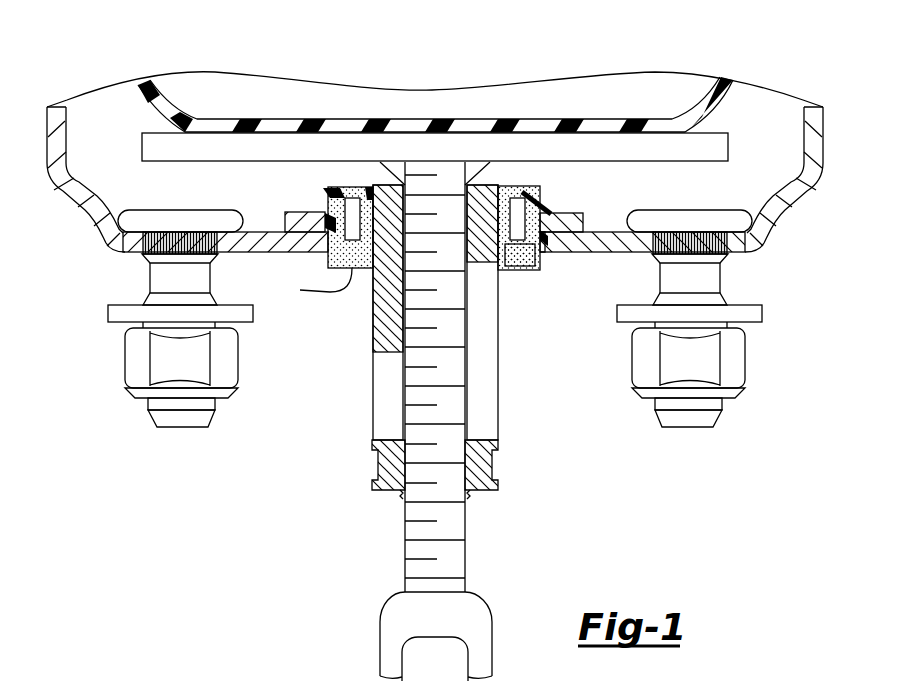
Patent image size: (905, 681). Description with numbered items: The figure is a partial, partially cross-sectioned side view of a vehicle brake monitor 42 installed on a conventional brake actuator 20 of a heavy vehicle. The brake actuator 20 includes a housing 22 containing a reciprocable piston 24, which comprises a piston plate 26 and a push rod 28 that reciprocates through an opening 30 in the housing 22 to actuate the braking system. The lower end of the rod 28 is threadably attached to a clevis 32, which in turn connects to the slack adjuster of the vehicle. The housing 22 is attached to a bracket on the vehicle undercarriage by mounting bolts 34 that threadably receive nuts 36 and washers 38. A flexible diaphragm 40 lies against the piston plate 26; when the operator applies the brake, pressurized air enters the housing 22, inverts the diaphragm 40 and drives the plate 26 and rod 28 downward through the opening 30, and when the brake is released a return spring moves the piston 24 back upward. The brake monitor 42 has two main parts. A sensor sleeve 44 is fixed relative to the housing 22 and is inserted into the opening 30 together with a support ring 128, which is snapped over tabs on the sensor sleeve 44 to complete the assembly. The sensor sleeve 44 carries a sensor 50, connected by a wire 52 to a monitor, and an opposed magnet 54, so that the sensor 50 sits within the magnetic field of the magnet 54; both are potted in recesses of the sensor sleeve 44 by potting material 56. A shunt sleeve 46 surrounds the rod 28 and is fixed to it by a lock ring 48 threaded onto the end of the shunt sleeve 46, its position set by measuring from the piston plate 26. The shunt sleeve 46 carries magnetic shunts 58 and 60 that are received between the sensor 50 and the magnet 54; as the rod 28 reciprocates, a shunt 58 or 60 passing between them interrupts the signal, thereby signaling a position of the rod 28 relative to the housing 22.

The brake actuator 20 is at (781, 83).
The housing 22 is at (821, 155).
The piston 24 is at (667, 130).
The piston plate 26 is at (284, 152).
The push rod 28 is at (455, 548).
The opening 30 is at (532, 250).
The clevis 32 is at (392, 625).
The mounting bolts 34 is at (126, 285).
The nuts 36 is at (740, 373).
The washers 38 is at (757, 307).
The flexible diaphragm 40 is at (165, 107).
The brake monitor 42 is at (514, 387).
The sensor sleeve 44 is at (546, 269).
The shunt sleeve 46 is at (336, 312).
The lock ring 48 is at (501, 472).
The sensor 50 is at (350, 207).
The wire 52 is at (348, 288).
The magnet 54 is at (517, 213).
The potting material 56 is at (508, 263).
The magnetic shunt 58 is at (380, 317).
The magnetic shunt 60 is at (487, 197).
The support ring 128 is at (285, 222).